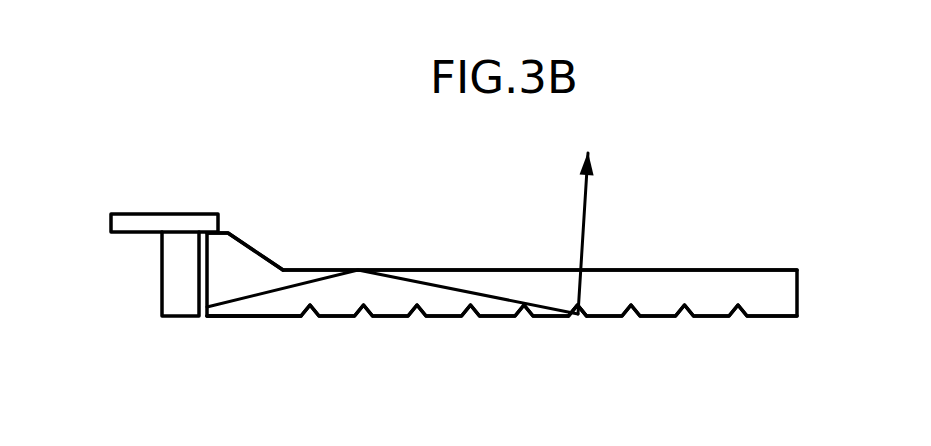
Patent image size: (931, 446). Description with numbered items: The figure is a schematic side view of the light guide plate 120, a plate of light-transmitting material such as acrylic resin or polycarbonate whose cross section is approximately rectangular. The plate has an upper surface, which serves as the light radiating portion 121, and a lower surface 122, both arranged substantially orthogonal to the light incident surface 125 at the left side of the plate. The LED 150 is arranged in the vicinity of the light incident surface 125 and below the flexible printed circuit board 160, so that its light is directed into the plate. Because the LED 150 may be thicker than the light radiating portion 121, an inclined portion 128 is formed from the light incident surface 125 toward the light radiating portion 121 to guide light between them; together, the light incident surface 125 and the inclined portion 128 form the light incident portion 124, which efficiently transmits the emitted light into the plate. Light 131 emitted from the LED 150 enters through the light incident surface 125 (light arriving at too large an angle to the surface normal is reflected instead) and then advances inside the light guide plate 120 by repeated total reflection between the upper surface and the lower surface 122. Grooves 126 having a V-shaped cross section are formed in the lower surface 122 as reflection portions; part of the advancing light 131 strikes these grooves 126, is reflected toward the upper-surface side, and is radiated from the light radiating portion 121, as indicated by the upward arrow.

The light guide plate 120 is at (441, 302).
The light radiating portion 121 is at (664, 270).
The lower surface 122 is at (658, 318).
The light incident portion 124 is at (230, 310).
The light incident surface 125 is at (203, 272).
The grooves 126 is at (579, 313).
The inclined portion 128 is at (254, 266).
The light 131 is at (378, 280).
The LED 150 is at (176, 305).
The flexible printed circuit board 160 is at (172, 214).